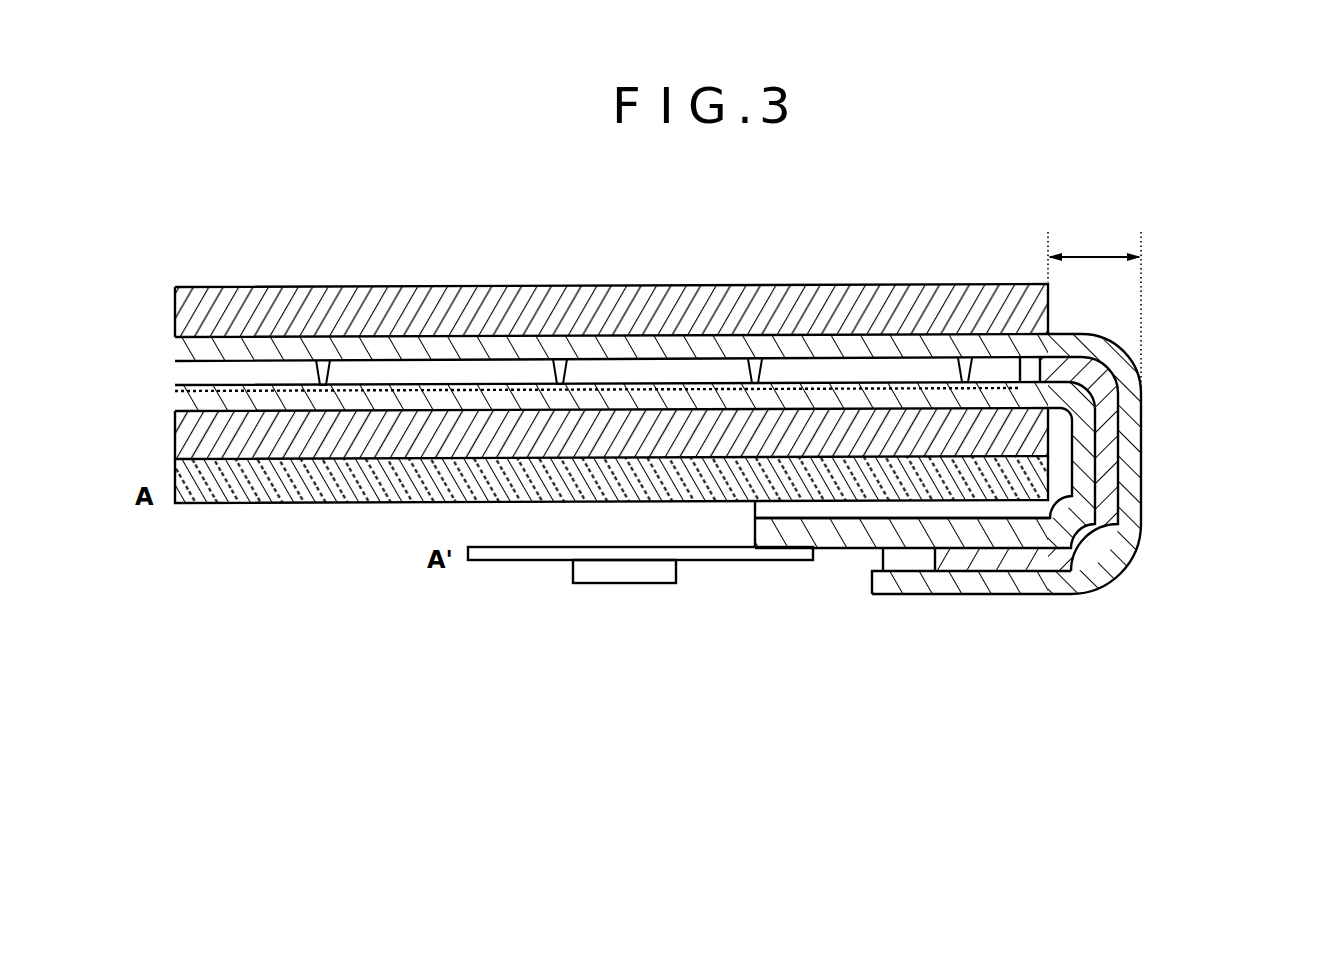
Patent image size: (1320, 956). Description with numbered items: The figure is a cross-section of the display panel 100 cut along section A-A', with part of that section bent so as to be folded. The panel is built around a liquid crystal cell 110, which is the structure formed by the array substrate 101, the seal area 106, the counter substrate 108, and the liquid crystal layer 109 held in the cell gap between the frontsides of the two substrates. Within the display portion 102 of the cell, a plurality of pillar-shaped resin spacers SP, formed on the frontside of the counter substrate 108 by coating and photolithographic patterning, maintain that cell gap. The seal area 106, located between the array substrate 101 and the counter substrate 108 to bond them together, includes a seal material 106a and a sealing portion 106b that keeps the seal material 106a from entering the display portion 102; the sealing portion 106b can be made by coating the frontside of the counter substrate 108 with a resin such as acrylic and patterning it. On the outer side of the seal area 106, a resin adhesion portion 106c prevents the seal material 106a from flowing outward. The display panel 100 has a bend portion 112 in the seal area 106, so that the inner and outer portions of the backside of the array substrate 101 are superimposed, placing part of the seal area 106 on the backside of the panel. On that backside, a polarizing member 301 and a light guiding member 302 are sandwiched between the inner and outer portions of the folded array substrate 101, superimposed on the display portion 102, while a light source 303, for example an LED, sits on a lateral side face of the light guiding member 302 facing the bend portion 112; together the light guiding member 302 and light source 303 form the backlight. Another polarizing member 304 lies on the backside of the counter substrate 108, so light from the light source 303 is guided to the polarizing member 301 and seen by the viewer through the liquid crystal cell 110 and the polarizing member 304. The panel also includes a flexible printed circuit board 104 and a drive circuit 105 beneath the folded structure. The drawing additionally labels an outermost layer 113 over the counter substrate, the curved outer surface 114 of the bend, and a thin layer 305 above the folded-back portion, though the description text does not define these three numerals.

The display panel 100 is at (925, 218).
The array substrate 101 is at (835, 549).
The display portion 102 is at (862, 383).
The flexible printed circuit board 104 is at (500, 561).
The drive circuit 105 is at (625, 584).
The seal area 106 is at (1247, 325).
The seal material 106a is at (1107, 408).
The sealing portion 106b is at (1107, 353).
The adhesion portion 106c is at (903, 572).
The counter substrate 108 is at (1000, 595).
The liquid crystal layer 109 is at (407, 370).
The liquid crystal cell 110 is at (172, 340).
The bend portion 112 is at (1090, 255).
The polarizing plate 113 is at (1021, 296).
The bent portion 114 is at (1142, 447).
The polarizing member 301 is at (182, 437).
The light guiding member 302 is at (302, 501).
The light source 303 is at (1084, 576).
The polarizing member 304 is at (346, 300).
The adhesive layer 305 is at (752, 517).
The spacers SP is at (965, 358).